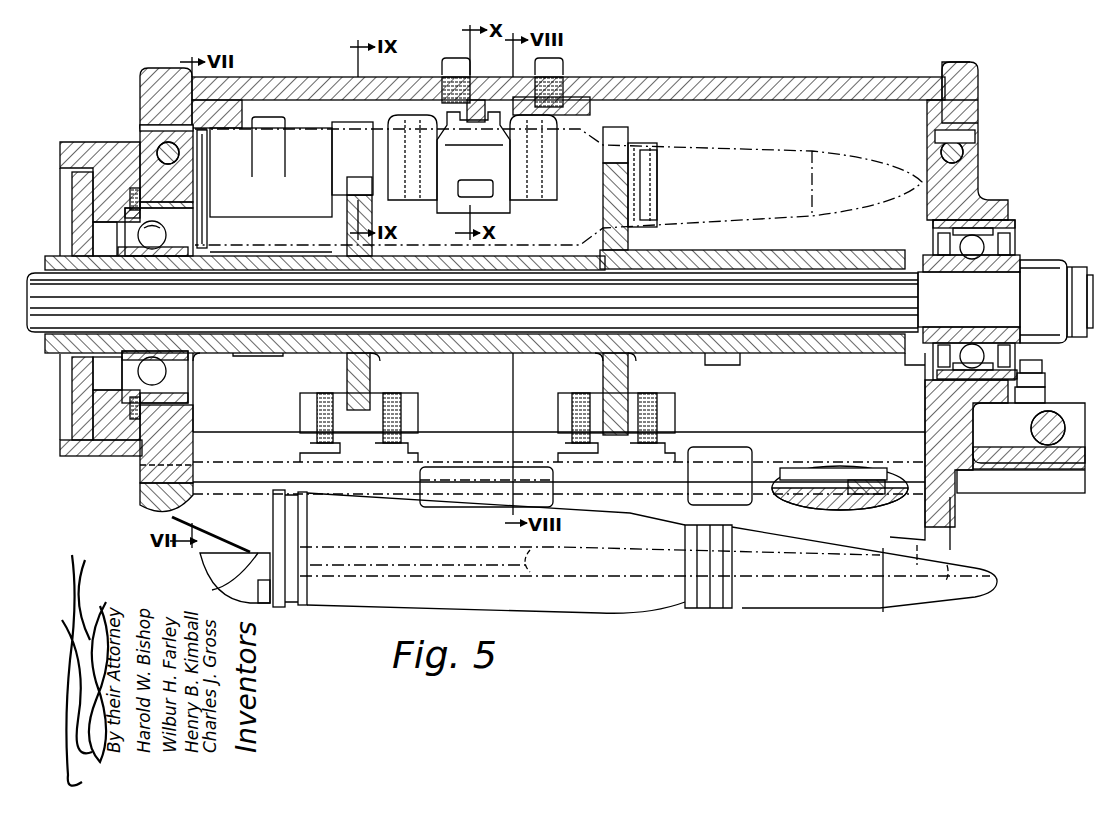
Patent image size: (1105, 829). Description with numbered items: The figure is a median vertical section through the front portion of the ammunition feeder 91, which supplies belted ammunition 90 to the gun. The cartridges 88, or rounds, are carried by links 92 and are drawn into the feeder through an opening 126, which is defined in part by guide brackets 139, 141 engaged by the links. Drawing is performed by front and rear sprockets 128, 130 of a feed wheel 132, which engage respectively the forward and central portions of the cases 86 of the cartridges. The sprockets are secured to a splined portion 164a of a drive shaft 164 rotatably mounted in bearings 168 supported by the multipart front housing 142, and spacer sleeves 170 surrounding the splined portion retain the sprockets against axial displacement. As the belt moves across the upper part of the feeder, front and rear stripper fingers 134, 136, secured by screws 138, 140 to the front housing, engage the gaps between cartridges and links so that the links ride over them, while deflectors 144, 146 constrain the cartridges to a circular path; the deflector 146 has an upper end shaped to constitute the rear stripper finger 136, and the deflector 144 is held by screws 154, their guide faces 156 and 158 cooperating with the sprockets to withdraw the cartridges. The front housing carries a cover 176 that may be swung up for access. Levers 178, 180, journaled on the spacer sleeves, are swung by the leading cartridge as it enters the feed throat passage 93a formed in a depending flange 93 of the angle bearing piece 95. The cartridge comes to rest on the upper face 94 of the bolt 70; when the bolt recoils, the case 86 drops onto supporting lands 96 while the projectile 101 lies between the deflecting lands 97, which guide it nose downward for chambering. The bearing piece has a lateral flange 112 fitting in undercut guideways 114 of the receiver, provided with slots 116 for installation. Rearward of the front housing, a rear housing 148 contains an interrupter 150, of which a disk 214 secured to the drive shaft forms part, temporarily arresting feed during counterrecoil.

The bolt 70 is at (258, 605).
The case 86 is at (550, 237).
The cartridges 88 is at (682, 147).
The belted ammunition 90 is at (412, 115).
The feeder 91 is at (740, 60).
The links 92 is at (505, 150).
The depending flange 93 is at (440, 575).
The feed throat passage 93a is at (172, 522).
The upper face of the bolt 94 is at (205, 556).
The angle bearing piece 95 is at (140, 510).
The cartridge supporting lands 96 is at (353, 560).
The cartridge deflecting and guiding lands 97 is at (790, 568).
The projectile 101 is at (858, 218).
The lateral flange 112 is at (890, 478).
The undercut guideways 114 is at (815, 495).
The laterally extending slots 116 is at (828, 478).
The opening 126 is at (870, 108).
The front sprocket 128 is at (630, 373).
The rear sprocket 130 is at (372, 373).
The feed wheel 132 is at (712, 386).
The front stripper finger 134 is at (478, 100).
The rear stripper finger 136 is at (345, 128).
The screws 138 is at (442, 62).
The guide bracket 139 is at (230, 100).
The screws 140 is at (405, 435).
The guide bracket 141 is at (570, 100).
The front housing 142 is at (975, 158).
The deflector 144 is at (628, 135).
The deflector 146 is at (335, 150).
The rear housing 148 is at (100, 142).
The interrupter 150 is at (45, 402).
The screws 154 is at (585, 462).
The guide face 156 is at (360, 165).
The guide face 158 is at (635, 158).
The drive shaft 164 is at (37, 268).
The splined portion 164a is at (550, 315).
The bearings 168 is at (990, 250).
The spacer sleeves 170 is at (750, 253).
The cover 176 is at (800, 77).
The lever 178 is at (736, 356).
The lever 180 is at (258, 355).
The disk 214 is at (72, 205).